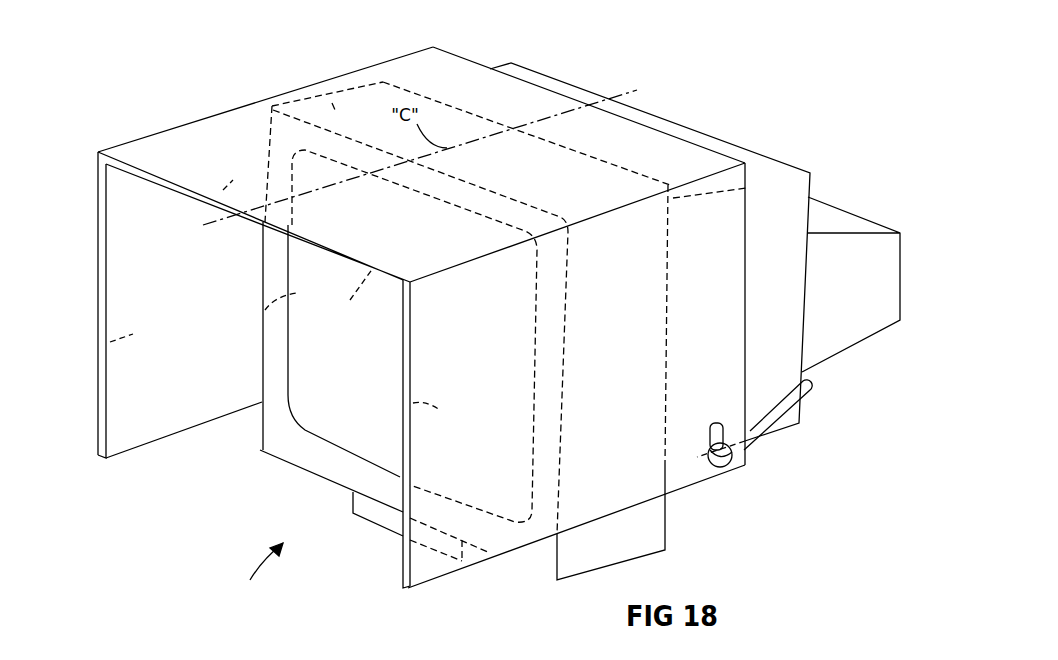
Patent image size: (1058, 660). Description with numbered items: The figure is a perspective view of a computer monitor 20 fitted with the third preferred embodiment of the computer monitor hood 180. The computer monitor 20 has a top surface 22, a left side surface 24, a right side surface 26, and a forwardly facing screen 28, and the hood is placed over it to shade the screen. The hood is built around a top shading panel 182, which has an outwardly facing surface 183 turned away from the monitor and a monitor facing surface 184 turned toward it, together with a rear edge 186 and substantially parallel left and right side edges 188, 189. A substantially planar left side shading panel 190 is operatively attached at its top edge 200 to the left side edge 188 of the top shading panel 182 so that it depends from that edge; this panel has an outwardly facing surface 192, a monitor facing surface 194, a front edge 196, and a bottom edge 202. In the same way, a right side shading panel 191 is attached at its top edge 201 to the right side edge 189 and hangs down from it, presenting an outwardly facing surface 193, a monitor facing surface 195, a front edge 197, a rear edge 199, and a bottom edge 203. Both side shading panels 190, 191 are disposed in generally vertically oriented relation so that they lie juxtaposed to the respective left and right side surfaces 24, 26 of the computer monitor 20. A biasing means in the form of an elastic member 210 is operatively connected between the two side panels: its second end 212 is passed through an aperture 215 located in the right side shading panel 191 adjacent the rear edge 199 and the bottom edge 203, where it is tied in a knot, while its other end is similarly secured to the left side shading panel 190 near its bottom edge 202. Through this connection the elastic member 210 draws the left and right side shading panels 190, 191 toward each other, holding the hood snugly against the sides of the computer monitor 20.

The computer monitor 20 is at (252, 571).
The top surface 22 is at (330, 100).
The left side surface 24 is at (260, 310).
The right side surface 26 is at (633, 537).
The forwardly facing screen 28 is at (346, 359).
The computer monitor hood 180 is at (208, 118).
The top shading panel 182 is at (167, 147).
The outwardly facing surface 183 is at (246, 164).
The monitor facing surface 184 is at (217, 201).
The rear edge 186 is at (462, 57).
The left side edge 188 is at (253, 103).
The right side edge 189 is at (450, 263).
The left side shading panel 190 is at (128, 425).
The right side shading panel 191 is at (423, 575).
The outwardly facing surface 192 is at (100, 347).
The outwardly facing surface 193 is at (521, 388).
The monitor facing surface 194 is at (183, 366).
The monitor facing surface 195 is at (397, 405).
The front edge 196 is at (100, 292).
The front edge 197 is at (403, 548).
The rear edge 199 is at (672, 327).
The top edge 200 is at (97, 150).
The top edge 201 is at (547, 233).
The bottom edge 202 is at (202, 425).
The bottom edge 203 is at (482, 565).
The elastic member 210 is at (812, 390).
The second end 212 is at (715, 423).
The aperture 215 is at (720, 468).